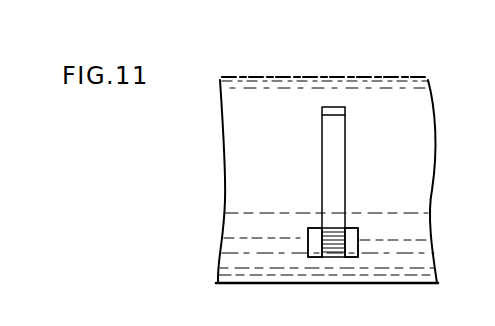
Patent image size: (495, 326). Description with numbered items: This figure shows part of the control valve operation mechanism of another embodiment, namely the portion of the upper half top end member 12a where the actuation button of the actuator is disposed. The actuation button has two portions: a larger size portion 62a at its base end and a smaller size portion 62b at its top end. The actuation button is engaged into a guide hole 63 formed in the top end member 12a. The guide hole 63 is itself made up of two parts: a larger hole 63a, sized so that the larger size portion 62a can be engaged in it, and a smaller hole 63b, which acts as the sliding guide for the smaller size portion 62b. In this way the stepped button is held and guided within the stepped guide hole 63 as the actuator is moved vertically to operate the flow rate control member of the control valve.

The upper half top end member 12a is at (278, 81).
The guide hole 63 is at (330, 190).
The larger hole 63a is at (352, 241).
The smaller hole 63b is at (340, 130).
The larger size portion 62a is at (315, 250).
The smaller size portion 62b is at (338, 248).